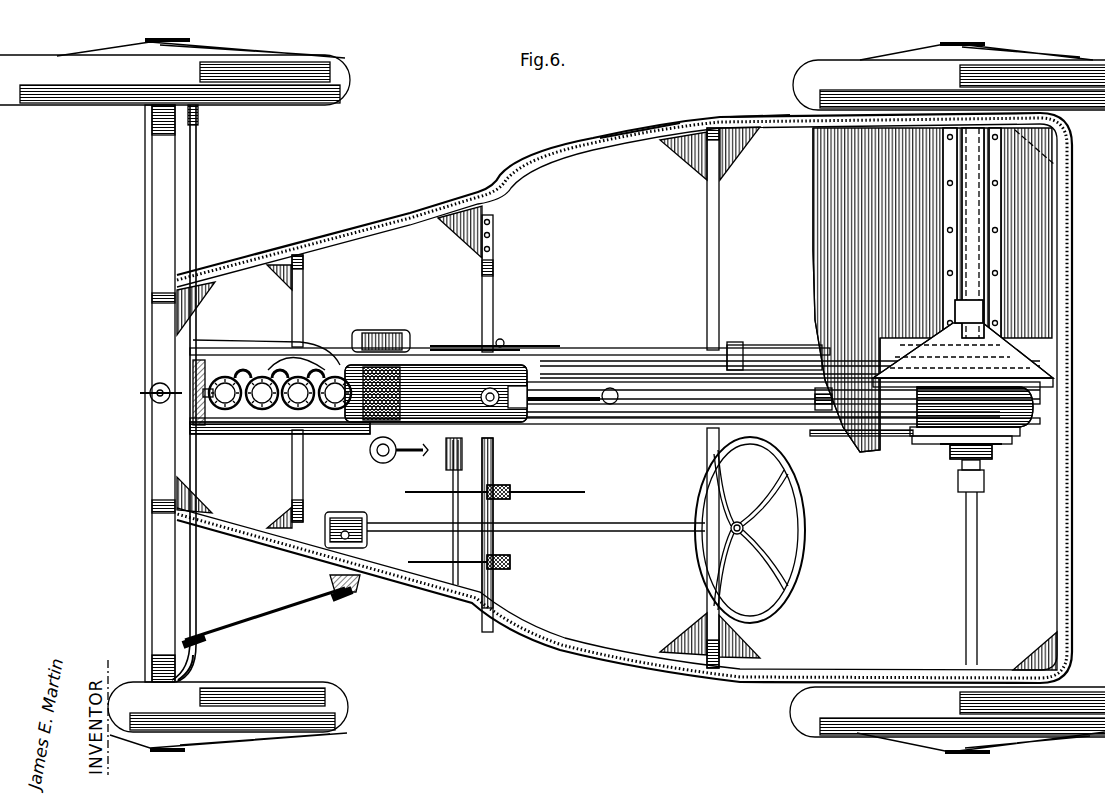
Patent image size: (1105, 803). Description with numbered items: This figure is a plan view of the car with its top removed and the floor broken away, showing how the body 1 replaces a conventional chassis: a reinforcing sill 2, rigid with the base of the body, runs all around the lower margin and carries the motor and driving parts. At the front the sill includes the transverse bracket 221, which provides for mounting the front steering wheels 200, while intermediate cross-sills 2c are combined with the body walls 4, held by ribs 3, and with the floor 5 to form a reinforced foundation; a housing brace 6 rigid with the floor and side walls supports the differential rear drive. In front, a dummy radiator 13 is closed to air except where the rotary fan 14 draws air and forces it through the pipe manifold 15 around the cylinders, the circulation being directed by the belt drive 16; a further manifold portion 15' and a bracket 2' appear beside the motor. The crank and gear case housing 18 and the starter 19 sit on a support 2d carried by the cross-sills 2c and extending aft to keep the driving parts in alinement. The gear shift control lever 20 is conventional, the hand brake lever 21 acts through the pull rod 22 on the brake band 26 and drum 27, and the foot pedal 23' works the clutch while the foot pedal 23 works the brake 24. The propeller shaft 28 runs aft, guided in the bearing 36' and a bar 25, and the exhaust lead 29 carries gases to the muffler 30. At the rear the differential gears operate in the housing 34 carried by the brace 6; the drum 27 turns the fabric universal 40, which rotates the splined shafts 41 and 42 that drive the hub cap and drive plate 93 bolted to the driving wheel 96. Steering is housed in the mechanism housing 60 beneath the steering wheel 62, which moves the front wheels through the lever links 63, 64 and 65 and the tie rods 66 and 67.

The body 1 is at (641, 129).
The sill 2 is at (624, 394).
The engine bracket 2' is at (381, 326).
The cross-sill 2c is at (303, 300).
The support 2d is at (632, 348).
The rib 3 is at (705, 126).
The body wall 4 is at (748, 118).
The floor 5 is at (825, 190).
The housing brace 6 is at (965, 248).
The dummy radiator 13 is at (150, 345).
The rotary fan 14 is at (192, 352).
The pipe manifold 15 is at (272, 357).
The cover 15' is at (298, 345).
The belt drive 16 is at (200, 384).
The crank and gear case housing 18 is at (452, 402).
The starter 19 is at (380, 466).
The gear shift control lever 20 is at (596, 380).
The hand brake lever 21 is at (256, 440).
The pull rod 22 is at (548, 340).
The foot pedal 23 is at (494, 511).
The foot pedal 23' is at (488, 574).
The brake 24 is at (575, 498).
The bar 25 is at (855, 438).
The brake band 26 is at (930, 440).
The drum 27 is at (940, 446).
The propeller shaft 28 is at (650, 408).
The exhaust lead 29 is at (660, 360).
The muffler 30 is at (776, 352).
The housing 34 is at (1028, 422).
The bearing 36' is at (810, 425).
The fabric universal 40 is at (986, 460).
The splined shaft 41 is at (984, 492).
The splined shaft 42 is at (978, 551).
The steering mechanism housing 60 is at (340, 520).
The steering wheel 62 is at (700, 554).
The lever link 63 is at (352, 592).
The lever link 64 is at (302, 602).
The lever link 65 is at (198, 660).
The tie rod 66 is at (199, 201).
The tie rod 67 is at (200, 114).
The combined hub cap and drive plate 93 is at (970, 46).
The driving wheel 96 is at (1010, 60).
The steering wheel 200 is at (205, 48).
The front transverse bracket 221 is at (157, 197).